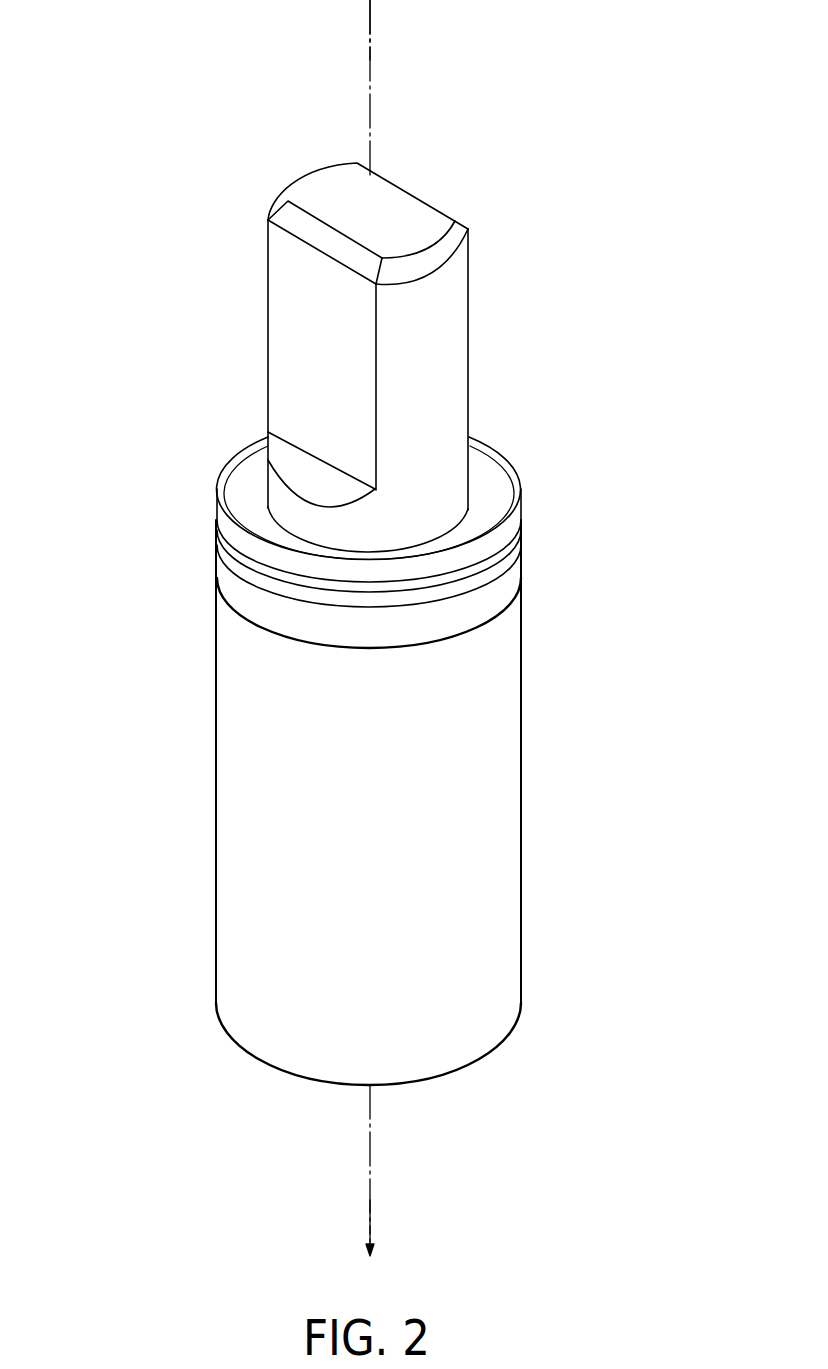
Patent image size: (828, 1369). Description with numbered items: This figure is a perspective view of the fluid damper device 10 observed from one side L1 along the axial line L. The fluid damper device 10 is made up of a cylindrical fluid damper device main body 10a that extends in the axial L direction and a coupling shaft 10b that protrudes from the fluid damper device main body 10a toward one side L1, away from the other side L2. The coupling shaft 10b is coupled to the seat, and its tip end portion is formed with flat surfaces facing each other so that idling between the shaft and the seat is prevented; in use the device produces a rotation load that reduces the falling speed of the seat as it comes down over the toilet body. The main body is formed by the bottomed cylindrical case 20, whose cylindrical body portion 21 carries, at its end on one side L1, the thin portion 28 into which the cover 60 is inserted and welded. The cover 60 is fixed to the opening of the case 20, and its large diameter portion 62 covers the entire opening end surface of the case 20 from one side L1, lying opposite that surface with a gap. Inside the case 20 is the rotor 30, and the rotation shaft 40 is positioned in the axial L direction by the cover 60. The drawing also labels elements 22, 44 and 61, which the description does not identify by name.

The fluid damper device 10 is at (150, 115).
The fluid damper device main body 10a is at (197, 768).
The coupling shaft 10b is at (248, 357).
The case 20 is at (540, 780).
The body portion 21 is at (513, 880).
The bottom end of base body 22 is at (488, 1023).
The thin portion 28 is at (515, 573).
The rotor 30 is at (368, 336).
The rotation shaft 40 is at (368, 336).
The contact pin 44 is at (460, 353).
The cover 60 is at (520, 474).
The collar at base of pin 61 is at (468, 508).
The large diameter portion 62 is at (478, 468).
The axial line L is at (372, 115).
The one side L1 is at (372, 12).
The other side L2 is at (372, 1215).